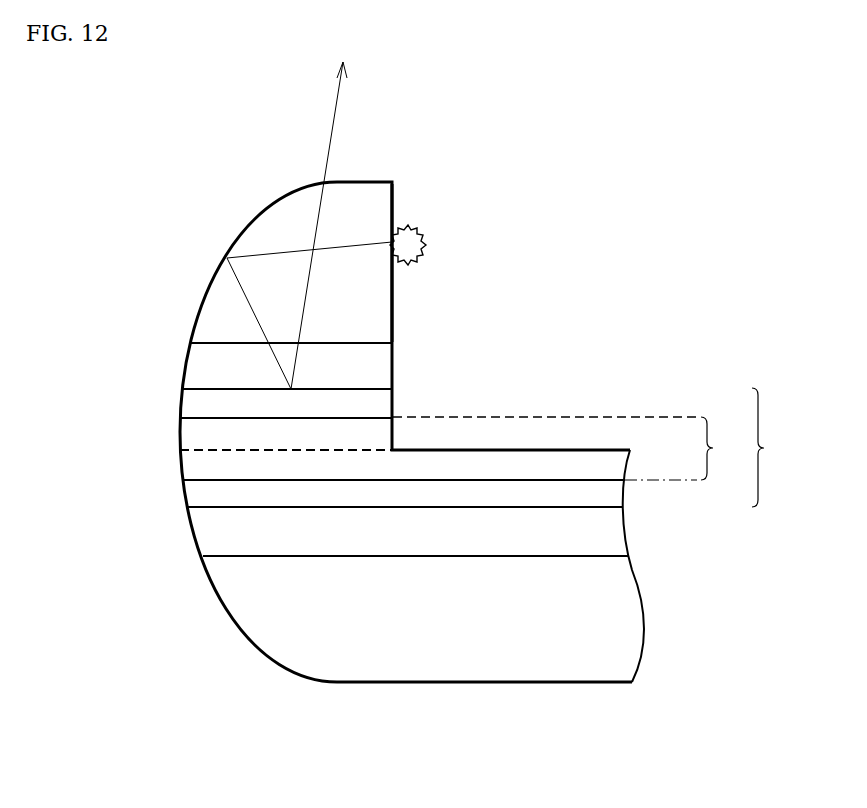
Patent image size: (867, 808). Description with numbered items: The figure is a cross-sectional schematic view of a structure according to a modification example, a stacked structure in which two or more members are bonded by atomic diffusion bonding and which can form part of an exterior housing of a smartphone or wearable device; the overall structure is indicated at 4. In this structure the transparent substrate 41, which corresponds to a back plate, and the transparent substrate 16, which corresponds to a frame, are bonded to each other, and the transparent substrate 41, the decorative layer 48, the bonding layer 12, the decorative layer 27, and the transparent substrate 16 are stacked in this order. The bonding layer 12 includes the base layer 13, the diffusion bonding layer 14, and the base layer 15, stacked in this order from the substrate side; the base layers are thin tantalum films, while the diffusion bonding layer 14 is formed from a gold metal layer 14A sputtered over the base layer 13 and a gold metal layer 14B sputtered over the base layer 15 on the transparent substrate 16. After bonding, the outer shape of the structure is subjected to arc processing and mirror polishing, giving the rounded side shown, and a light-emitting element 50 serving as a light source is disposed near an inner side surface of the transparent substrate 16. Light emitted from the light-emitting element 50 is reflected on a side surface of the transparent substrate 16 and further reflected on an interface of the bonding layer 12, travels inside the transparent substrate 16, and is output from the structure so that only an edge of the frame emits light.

The light emitting device 4 is at (626, 233).
The bonding layer 12 is at (776, 447).
The base layer 13 is at (617, 494).
The diffusion bonding layer 14 is at (726, 448).
The metal layer 14A is at (620, 463).
The metal layer 14B is at (383, 436).
The base layer 15 is at (383, 405).
The transparent substrate 16 is at (392, 309).
The decorative layer 27 is at (392, 357).
The transparent substrate 41 is at (633, 608).
The decorative layer 48 is at (617, 531).
The light-emitting element 50 is at (415, 240).